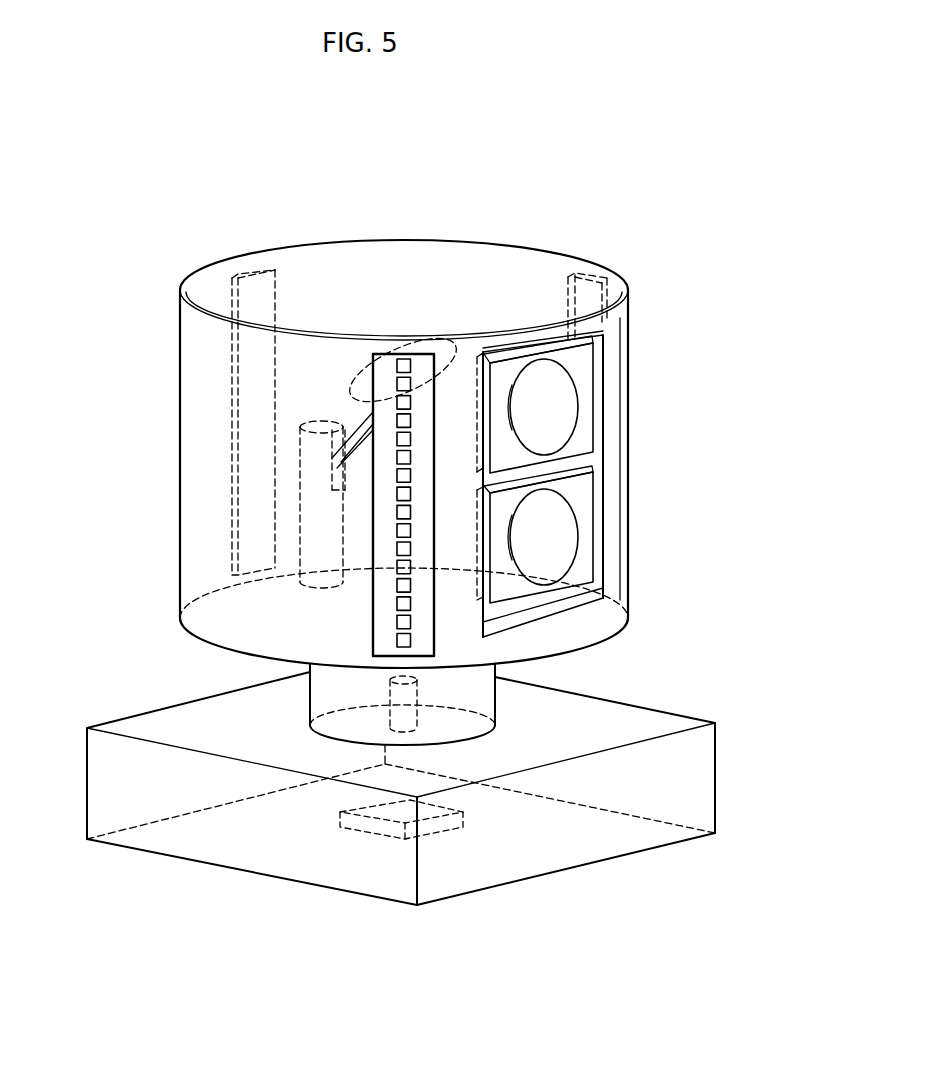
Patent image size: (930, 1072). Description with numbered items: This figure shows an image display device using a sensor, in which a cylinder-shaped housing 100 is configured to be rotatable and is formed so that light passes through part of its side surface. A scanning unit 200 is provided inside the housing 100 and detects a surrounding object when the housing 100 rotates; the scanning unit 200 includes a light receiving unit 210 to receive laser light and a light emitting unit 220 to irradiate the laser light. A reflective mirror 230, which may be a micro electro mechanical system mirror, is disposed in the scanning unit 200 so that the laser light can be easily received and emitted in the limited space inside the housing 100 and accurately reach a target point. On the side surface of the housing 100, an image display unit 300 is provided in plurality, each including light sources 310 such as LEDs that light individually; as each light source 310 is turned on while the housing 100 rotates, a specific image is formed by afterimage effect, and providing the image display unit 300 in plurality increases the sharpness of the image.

The housing 100 is at (583, 257).
The scanning unit 200 is at (597, 975).
The light receiving unit 210 is at (440, 820).
The light emitting unit 220 is at (418, 712).
The reflective mirror 230 is at (365, 403).
The image display unit 300 is at (259, 302).
The light source 310 is at (405, 606).